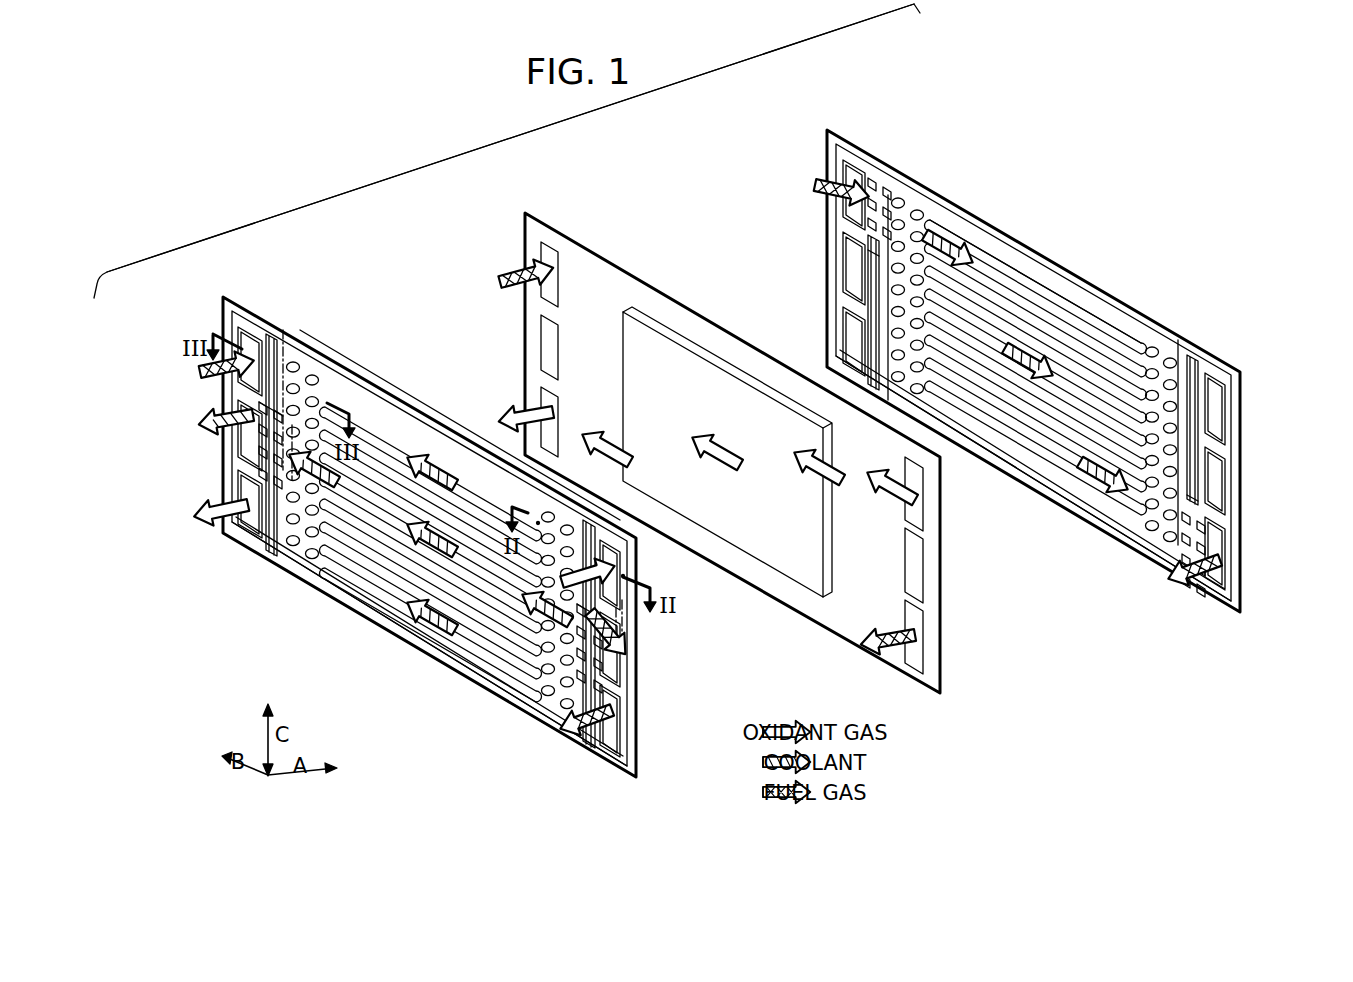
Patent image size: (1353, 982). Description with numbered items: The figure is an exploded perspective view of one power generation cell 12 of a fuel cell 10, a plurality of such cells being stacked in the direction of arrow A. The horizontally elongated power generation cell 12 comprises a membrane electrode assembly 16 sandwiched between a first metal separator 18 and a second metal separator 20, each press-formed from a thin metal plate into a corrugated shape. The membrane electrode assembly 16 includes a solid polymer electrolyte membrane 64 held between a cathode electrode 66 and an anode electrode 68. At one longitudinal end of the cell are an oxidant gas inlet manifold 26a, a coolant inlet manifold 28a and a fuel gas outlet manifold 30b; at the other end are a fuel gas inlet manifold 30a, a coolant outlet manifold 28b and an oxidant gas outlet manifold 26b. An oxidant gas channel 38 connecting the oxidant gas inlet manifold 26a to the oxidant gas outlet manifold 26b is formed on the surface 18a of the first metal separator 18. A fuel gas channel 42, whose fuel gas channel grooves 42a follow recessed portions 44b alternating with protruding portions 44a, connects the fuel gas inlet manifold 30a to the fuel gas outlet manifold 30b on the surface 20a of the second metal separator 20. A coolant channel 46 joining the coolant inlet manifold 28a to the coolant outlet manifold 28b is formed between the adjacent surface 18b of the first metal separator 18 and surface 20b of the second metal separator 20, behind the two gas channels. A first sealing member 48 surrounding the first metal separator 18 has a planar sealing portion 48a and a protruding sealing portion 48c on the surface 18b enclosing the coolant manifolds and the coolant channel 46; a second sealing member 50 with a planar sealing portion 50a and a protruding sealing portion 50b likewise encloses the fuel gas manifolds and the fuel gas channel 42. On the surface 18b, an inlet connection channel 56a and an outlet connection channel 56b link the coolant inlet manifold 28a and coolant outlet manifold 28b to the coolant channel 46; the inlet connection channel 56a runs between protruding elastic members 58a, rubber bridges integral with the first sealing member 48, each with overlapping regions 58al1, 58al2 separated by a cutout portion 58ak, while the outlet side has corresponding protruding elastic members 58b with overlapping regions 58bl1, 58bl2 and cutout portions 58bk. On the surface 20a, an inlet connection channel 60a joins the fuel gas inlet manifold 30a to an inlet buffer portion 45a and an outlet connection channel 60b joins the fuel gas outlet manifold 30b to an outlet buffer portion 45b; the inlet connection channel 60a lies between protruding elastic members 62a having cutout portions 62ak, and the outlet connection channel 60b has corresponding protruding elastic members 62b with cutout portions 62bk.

The fuel cell 10 is at (509, 112).
The power generation cell 12 is at (612, 103).
The membrane electrode assembly 16 is at (533, 212).
The first metal separator 18 is at (229, 297).
The surface of first metal separator 18a is at (450, 654).
The surface of first metal separator 18b is at (404, 631).
The second metal separator 20 is at (845, 136).
The surface of second metal separator 20a is at (1020, 470).
The surface of second metal separator 20b is at (1062, 500).
The oxidant gas inlet manifold 26a is at (610, 558).
The oxidant gas outlet manifold 26b is at (242, 512).
The coolant inlet manifold 28a is at (612, 652).
The coolant outlet manifold 28b is at (246, 442).
The fuel gas inlet manifold 30a is at (248, 340).
The fuel gas outlet manifold 30b is at (616, 735).
The oxidant gas channel 38 is at (388, 440).
The fuel gas channel 42 is at (981, 286).
The fuel gas channel grooves 42a is at (1059, 281).
The protruding portions 44a is at (1056, 330).
The recessed portions 44b is at (1102, 335).
The inlet buffer portion 45a is at (896, 348).
The outlet buffer portion 45b is at (1175, 368).
The coolant channel 46 is at (363, 428).
The first sealing member 48 is at (361, 630).
The planar sealing portion 48a is at (438, 468).
The protruding sealing portion 48c is at (338, 612).
The second sealing member 50 is at (1062, 510).
The planar sealing portion 50a is at (1226, 598).
The protruding sealing portion 50b is at (930, 200).
The inlet connection channel 56a is at (565, 624).
The outlet connection channel 56b is at (283, 432).
The protruding elastic members 58a is at (575, 665).
The cutout portion 58ak is at (590, 672).
The overlapping region 58al1 is at (622, 600).
The overlapping region 58al2 is at (616, 608).
The protruding elastic members 58b is at (286, 522).
The cutout portion 58bk is at (268, 466).
The overlapping region 58bl1 is at (292, 425).
The overlapping region 58bl2 is at (283, 330).
The inlet connection channel 60a is at (892, 197).
The outlet connection channel 60b is at (1180, 545).
The protruding elastic members 62a is at (872, 188).
The cutout portion 62ak is at (862, 258).
The protruding elastic members 62b is at (1192, 568).
The cutout portion 62bk is at (1190, 520).
The solid polymer electrolyte membrane 64 is at (838, 620).
The cathode electrode 66 is at (652, 340).
The anode electrode 68 is at (685, 362).